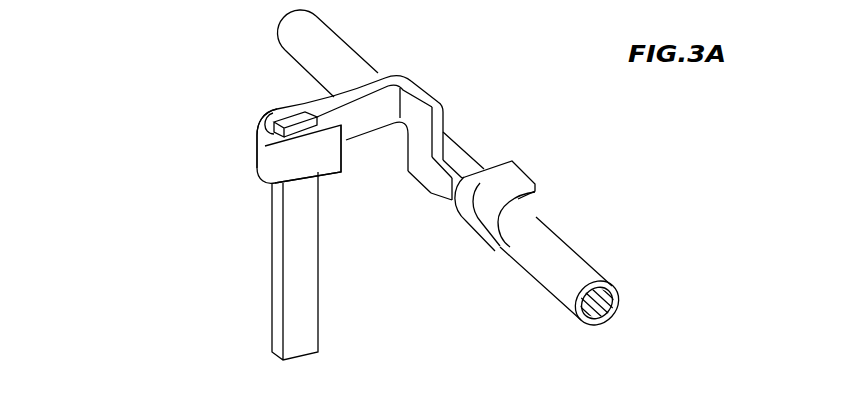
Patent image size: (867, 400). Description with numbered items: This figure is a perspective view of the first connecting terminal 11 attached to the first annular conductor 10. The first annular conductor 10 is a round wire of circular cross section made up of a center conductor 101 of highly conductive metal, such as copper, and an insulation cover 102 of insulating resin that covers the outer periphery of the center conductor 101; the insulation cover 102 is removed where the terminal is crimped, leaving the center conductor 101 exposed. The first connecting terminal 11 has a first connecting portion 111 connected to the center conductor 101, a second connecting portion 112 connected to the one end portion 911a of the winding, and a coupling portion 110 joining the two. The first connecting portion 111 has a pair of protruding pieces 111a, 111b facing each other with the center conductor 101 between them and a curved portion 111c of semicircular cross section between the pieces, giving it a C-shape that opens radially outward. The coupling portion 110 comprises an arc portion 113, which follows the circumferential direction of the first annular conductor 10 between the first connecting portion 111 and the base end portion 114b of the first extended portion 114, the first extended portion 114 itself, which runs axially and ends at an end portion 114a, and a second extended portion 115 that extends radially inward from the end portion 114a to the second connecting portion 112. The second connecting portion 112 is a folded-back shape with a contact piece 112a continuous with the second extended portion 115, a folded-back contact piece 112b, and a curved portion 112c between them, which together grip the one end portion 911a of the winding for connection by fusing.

The first connecting terminal 11 is at (260, 40).
The second connecting portion 112 is at (252, 191).
The contact piece 112a is at (287, 111).
The contact piece 112b is at (307, 163).
The curved portion 112c is at (263, 157).
The coupling portion 110 is at (462, 268).
The second extended portion 115 is at (366, 117).
The first extended portion 114 is at (420, 148).
The end portion of the first extended portion 114a is at (417, 107).
The base end portion of the first extended portion 114b is at (423, 178).
The arc portion 113 is at (438, 190).
The first connecting portion 111 is at (526, 154).
The protruding piece 111a is at (520, 180).
The protruding piece 111b is at (495, 232).
The curved portion 111c is at (473, 217).
The first annular conductor 10 is at (608, 247).
The center conductor 101 is at (602, 303).
The insulation cover 102 is at (593, 323).
The one end portion of the winding 911a is at (316, 348).